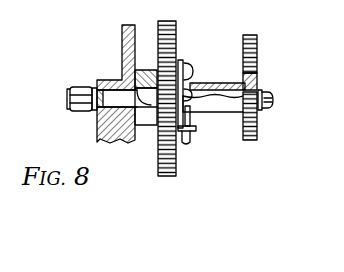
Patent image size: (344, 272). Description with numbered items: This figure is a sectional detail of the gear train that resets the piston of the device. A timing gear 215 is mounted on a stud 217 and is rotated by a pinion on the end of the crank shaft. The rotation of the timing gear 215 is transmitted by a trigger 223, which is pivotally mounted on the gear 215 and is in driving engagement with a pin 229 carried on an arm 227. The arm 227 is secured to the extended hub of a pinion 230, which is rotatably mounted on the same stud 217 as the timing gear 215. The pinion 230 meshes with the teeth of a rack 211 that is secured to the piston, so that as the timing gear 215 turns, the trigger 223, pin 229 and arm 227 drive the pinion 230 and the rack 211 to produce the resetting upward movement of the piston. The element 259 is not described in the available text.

The rack 211 is at (257, 138).
The timing gear 215 is at (177, 27).
The stud 217 is at (121, 78).
The trigger 223 is at (183, 62).
The arm 227 is at (193, 118).
The pin 229 is at (189, 142).
The pinion 230 is at (258, 80).
The disc 259 is at (192, 70).